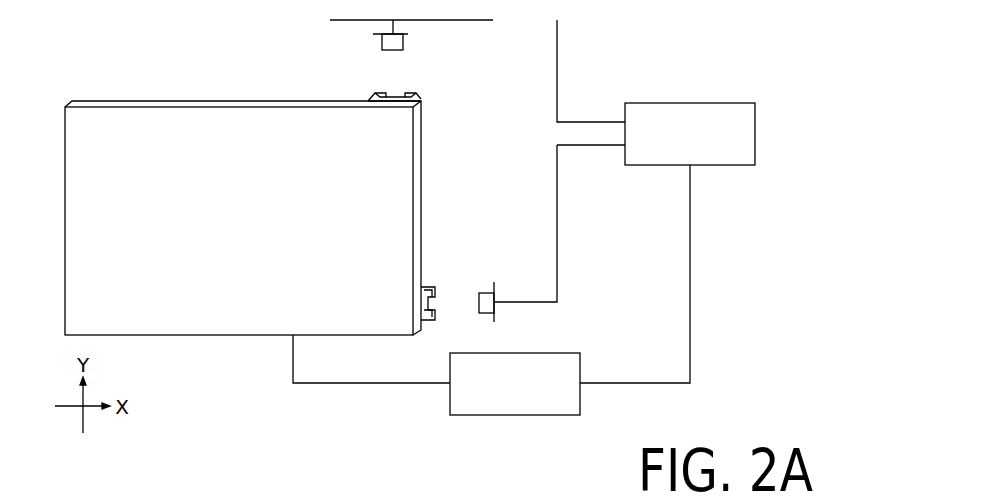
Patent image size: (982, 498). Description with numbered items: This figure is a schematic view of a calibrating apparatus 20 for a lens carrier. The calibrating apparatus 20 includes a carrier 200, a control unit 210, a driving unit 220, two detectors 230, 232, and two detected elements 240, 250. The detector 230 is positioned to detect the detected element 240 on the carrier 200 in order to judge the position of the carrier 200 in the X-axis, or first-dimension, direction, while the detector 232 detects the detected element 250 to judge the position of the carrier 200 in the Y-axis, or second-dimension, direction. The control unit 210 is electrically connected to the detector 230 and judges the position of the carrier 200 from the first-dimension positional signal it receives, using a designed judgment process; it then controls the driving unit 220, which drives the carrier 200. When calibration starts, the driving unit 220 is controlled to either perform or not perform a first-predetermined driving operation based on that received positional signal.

The calibrating apparatus 20 is at (771, 375).
The carrier 200 is at (408, 185).
The control unit 210 is at (737, 102).
The driving unit 220 is at (580, 405).
The detector 230 is at (403, 44).
The detector 232 is at (483, 290).
The detected element 240 is at (422, 94).
The detected element 250 is at (430, 285).